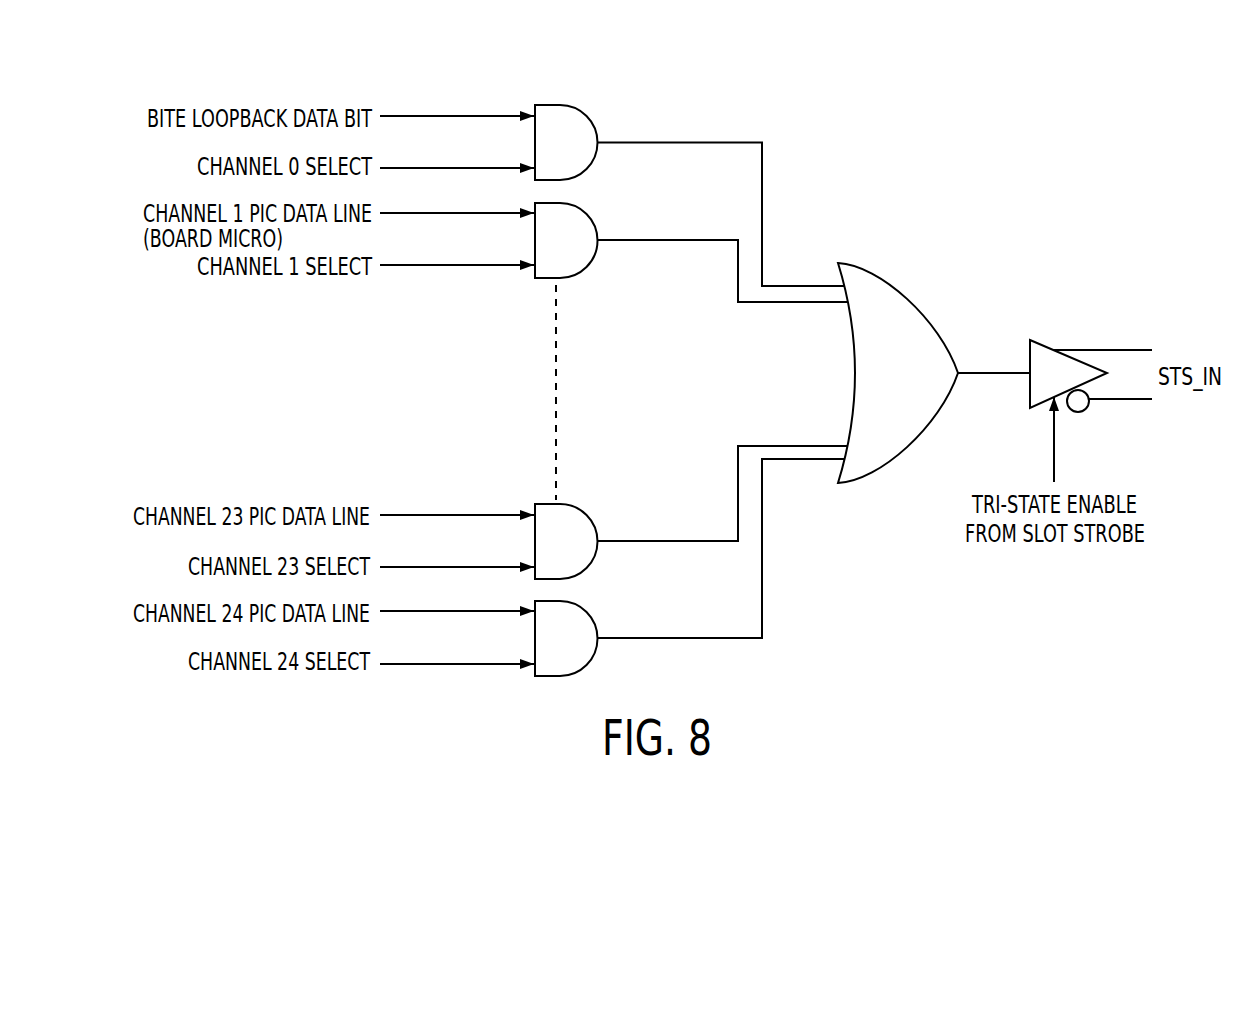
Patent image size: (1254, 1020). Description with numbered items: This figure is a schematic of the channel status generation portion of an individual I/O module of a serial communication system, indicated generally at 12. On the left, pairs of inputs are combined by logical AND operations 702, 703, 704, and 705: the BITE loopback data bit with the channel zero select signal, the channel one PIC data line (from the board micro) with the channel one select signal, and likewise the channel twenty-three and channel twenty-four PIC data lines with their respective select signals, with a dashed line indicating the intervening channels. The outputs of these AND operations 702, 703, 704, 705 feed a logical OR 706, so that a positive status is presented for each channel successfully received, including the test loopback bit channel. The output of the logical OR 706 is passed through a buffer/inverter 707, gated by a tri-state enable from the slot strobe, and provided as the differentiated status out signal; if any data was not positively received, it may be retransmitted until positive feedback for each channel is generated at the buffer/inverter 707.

The slot strobe / BITE test circuit 12 is at (1081, 100).
The logical AND operation 702 is at (578, 108).
The logical AND operation 703 is at (578, 206).
The logical AND operation 704 is at (578, 507).
The logical AND operation 705 is at (578, 604).
The logical OR 706 is at (887, 278).
The buffer/inverter 707 is at (1041, 340).